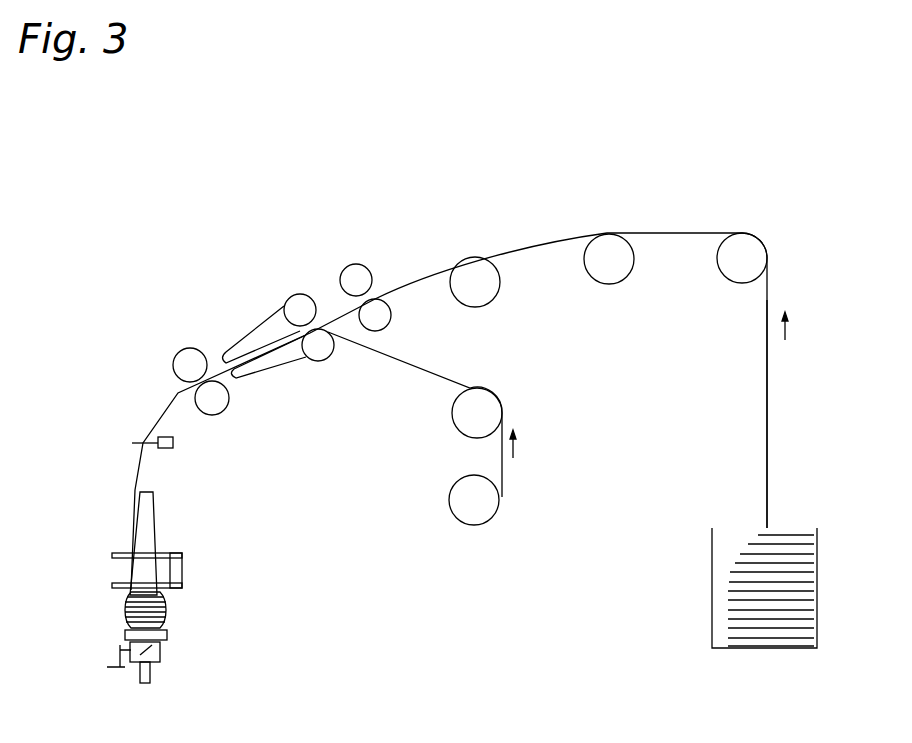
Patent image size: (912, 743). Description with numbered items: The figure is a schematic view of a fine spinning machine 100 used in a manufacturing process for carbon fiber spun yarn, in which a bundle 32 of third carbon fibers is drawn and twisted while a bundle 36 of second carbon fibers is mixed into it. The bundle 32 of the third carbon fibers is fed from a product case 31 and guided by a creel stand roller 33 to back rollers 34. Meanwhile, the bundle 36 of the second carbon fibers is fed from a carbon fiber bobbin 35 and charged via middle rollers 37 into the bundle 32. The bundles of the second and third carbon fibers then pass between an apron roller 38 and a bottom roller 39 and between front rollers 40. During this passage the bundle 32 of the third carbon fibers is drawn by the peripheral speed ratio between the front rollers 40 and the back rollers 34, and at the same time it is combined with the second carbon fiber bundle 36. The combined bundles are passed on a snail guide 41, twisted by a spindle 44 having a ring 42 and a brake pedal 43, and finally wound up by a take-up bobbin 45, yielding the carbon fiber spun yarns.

The fine spinning machine 100 is at (228, 221).
The product case 31 is at (768, 652).
The bundle of third carbon fibers 32 is at (767, 432).
The creel stand roller 33 is at (613, 237).
The back rollers 34 is at (390, 322).
The carbon fiber bobbin 35 is at (488, 521).
The bundle of second carbon fibers 36 is at (502, 463).
The middle rollers 37 is at (333, 360).
The apron roller 38 is at (252, 323).
The bottom roller 39 is at (287, 370).
The front rollers 40 is at (178, 348).
The snail guide 41 is at (175, 442).
The ring 42 is at (183, 572).
The brake pedal 43 is at (112, 669).
The spindle 44 is at (154, 510).
The take-up bobbin 45 is at (125, 613).